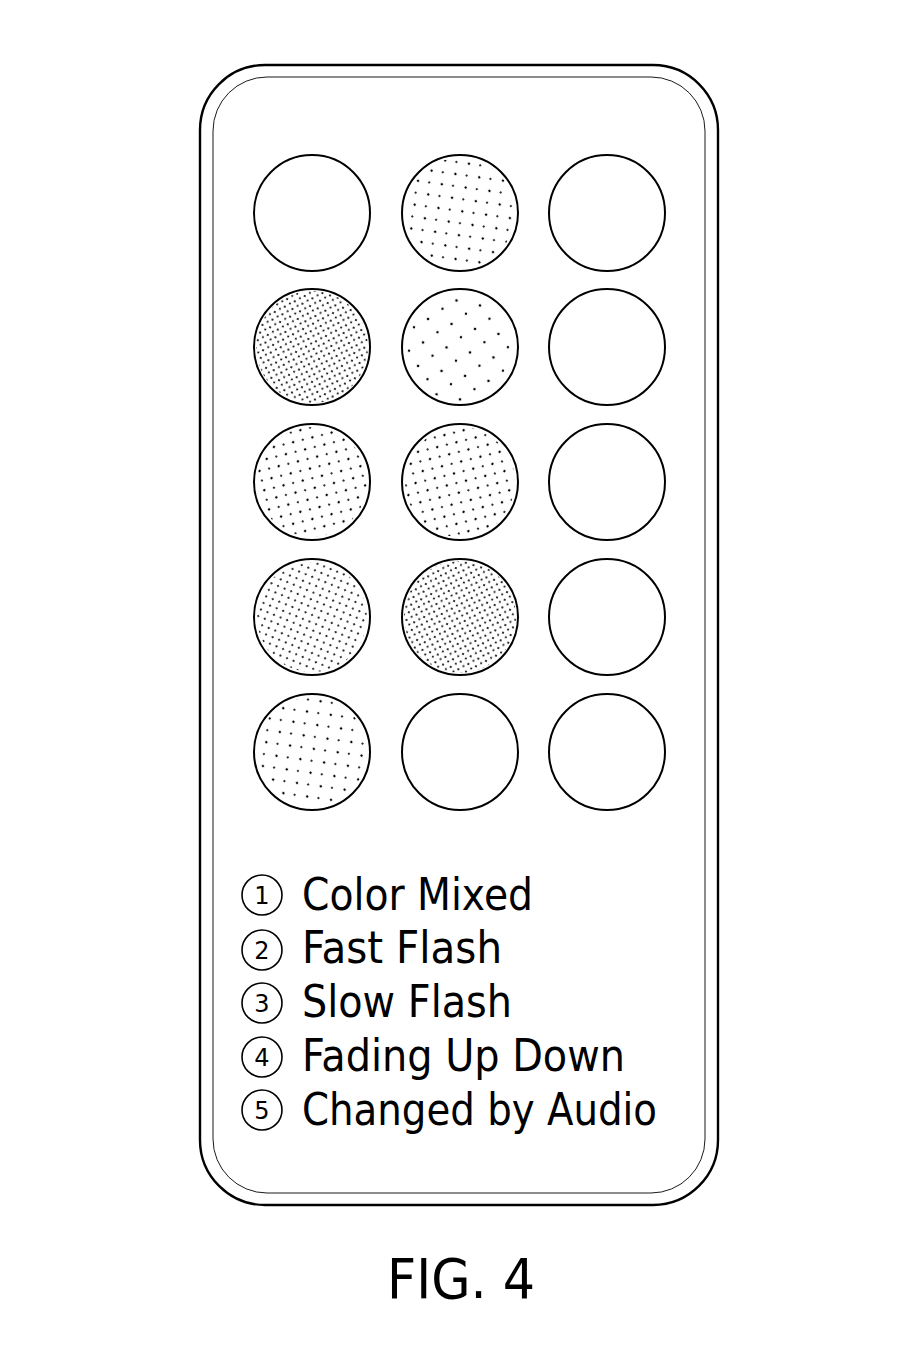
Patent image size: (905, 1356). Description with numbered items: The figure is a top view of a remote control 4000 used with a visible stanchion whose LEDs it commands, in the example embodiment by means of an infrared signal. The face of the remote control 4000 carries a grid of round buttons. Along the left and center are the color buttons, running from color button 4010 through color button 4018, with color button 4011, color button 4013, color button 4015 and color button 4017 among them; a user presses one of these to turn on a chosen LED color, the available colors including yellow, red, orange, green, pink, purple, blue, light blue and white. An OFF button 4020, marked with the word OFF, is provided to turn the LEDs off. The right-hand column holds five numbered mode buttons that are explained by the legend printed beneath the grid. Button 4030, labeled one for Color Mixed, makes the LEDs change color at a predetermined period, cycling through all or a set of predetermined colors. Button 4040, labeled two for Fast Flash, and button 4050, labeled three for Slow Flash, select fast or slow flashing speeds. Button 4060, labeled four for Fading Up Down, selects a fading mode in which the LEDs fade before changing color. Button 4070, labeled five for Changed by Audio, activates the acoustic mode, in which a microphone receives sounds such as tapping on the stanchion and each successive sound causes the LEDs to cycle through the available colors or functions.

The remote control 4000 is at (163, 82).
The color button 4010 is at (463, 165).
The color button 4011 is at (267, 347).
The color button 4013 is at (267, 482).
The color button 4015 is at (267, 617).
The color button 4017 is at (267, 753).
The color button 4018 is at (490, 788).
The OFF button 4020 is at (313, 165).
The button (1—Color Mixed) 4030 is at (650, 212).
The button (2—Fast Flash) 4040 is at (650, 347).
The button (3—Slow Flash) 4050 is at (650, 482).
The button (4—Fading Up Down) 4060 is at (650, 617).
The button (5—Changed by Audio) 4070 is at (650, 752).